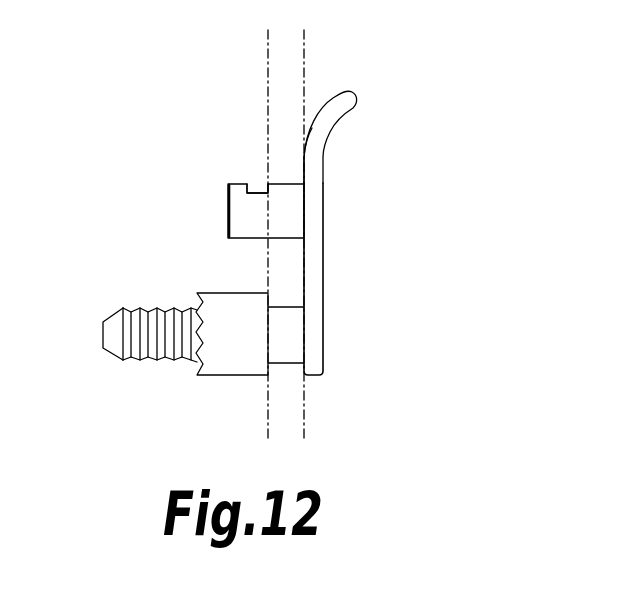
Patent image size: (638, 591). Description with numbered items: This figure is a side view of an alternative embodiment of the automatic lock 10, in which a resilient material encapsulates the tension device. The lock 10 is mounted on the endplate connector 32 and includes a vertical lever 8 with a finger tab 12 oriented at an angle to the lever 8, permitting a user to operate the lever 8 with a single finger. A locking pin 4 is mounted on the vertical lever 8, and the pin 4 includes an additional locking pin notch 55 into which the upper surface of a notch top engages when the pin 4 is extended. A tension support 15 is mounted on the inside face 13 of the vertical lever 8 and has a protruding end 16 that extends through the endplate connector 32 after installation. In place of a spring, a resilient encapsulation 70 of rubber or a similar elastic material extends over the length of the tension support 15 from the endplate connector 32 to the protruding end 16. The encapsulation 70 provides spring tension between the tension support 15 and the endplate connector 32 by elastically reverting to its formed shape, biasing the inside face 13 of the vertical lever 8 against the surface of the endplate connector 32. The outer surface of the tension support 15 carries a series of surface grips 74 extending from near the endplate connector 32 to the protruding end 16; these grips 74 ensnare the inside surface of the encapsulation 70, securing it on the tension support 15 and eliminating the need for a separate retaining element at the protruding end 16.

The automatic lock 10 is at (217, 122).
The endplate connector 32 is at (305, 57).
The vertical lever 8 is at (325, 278).
The finger tab 12 is at (356, 96).
The inside face 13 is at (303, 168).
The locking pin 4 is at (231, 184).
The locking pin notch 55 is at (257, 188).
The tension support 15 is at (258, 294).
The resilient encapsulation 70 is at (246, 378).
The protruding end 16 is at (103, 320).
The surface grips 74 is at (168, 362).